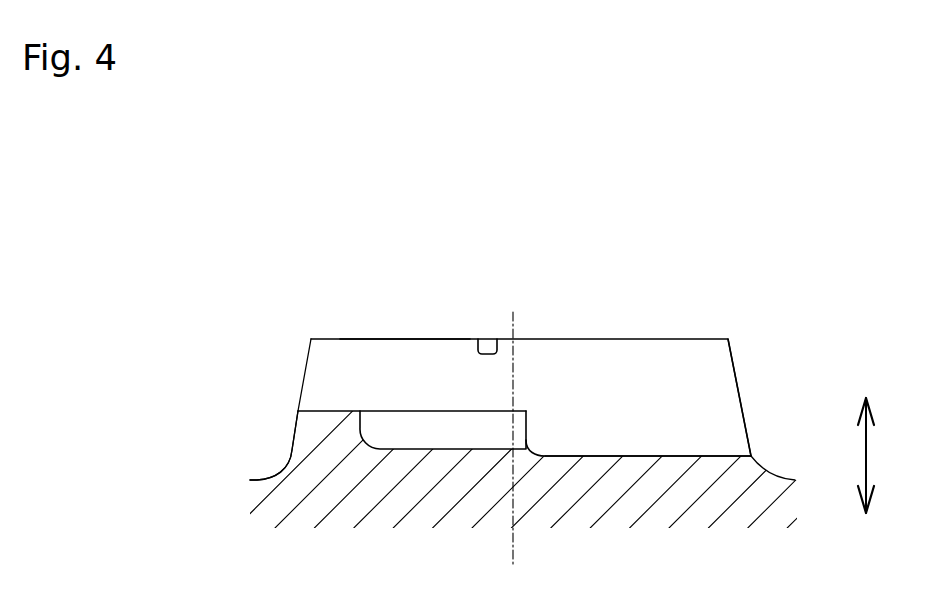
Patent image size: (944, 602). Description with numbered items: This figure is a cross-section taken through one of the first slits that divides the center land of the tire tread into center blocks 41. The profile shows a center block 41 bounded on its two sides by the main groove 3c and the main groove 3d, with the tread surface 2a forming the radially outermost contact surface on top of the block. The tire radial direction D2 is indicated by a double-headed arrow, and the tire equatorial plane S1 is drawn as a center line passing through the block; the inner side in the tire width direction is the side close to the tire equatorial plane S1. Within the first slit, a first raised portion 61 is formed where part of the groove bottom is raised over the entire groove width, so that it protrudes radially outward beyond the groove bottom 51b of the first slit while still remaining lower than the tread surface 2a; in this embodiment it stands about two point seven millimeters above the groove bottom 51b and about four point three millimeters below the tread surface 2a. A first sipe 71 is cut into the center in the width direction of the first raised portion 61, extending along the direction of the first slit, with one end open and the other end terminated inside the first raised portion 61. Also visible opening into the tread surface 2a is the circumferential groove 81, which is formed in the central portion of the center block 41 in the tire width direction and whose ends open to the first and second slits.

The tread surface 2a is at (632, 339).
The center block 41 is at (422, 339).
The first raised portion 61 is at (337, 410).
The first sipe 71 is at (450, 427).
The circumferential groove 81 is at (488, 345).
The tire equatorial plane S1 is at (513, 328).
The main groove 3c is at (263, 372).
The main groove 3d is at (780, 377).
The groove bottom 51b is at (687, 456).
The tire radial direction D2 is at (881, 455).